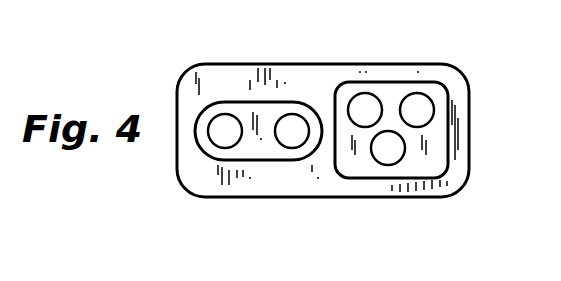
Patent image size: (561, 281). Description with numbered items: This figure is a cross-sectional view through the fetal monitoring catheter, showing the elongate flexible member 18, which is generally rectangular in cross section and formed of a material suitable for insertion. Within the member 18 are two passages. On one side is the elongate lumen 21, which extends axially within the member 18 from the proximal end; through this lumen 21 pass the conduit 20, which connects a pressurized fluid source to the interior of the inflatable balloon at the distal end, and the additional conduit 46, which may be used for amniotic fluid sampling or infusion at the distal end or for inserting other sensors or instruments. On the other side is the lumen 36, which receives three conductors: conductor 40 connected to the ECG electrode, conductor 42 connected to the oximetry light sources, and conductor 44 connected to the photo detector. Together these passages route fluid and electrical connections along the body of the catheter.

The flexible member 18 is at (473, 142).
The conduit 20 is at (297, 112).
The elongate lumen 21 is at (268, 162).
The lumen 36 is at (390, 177).
The conductor 40 is at (403, 160).
The conductor 42 is at (427, 100).
The conductor 44 is at (369, 94).
The additional conduit 46 is at (222, 122).